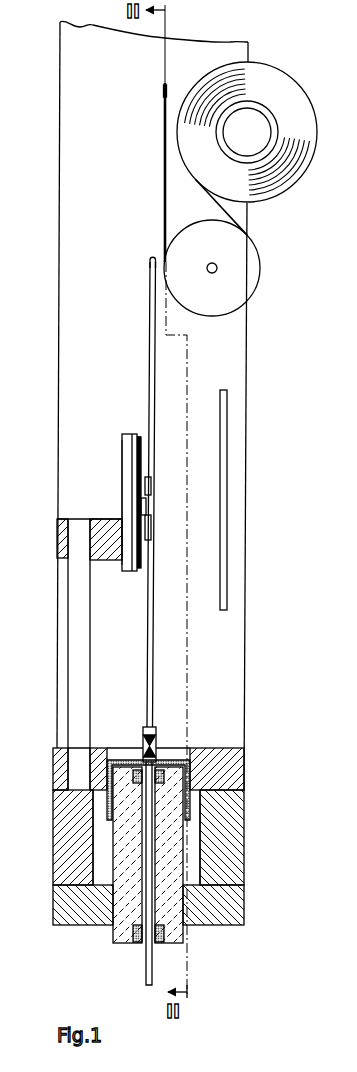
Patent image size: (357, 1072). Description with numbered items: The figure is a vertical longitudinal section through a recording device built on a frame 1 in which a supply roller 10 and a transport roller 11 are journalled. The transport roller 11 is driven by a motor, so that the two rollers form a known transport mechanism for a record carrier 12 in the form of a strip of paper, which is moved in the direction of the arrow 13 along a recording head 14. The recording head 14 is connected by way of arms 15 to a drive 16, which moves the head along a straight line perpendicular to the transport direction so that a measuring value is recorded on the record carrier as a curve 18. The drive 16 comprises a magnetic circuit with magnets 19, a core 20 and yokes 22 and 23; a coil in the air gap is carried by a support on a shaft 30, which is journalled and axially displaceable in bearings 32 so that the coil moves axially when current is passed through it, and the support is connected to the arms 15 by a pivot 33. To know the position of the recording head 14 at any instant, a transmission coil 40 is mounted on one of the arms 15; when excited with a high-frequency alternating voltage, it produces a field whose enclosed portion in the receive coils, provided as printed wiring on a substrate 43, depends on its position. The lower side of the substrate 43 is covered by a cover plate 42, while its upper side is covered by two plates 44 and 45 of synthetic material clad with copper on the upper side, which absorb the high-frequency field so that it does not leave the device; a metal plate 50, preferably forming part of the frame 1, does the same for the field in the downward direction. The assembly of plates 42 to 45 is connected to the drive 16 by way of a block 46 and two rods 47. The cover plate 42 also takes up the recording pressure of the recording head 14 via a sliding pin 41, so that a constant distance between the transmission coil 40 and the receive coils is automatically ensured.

The frame 1 is at (74, 76).
The supply roller 10 is at (278, 84).
The transport roller 11 is at (250, 281).
The record carrier 12 is at (163, 150).
The arrow 13 is at (164, 92).
The recording head 14 is at (161, 262).
The arms 15 is at (154, 357).
The drive 16 is at (54, 820).
The curve 18 is at (62, 863).
The magnets 19 is at (232, 848).
The core 20 is at (115, 927).
The yoke 22 is at (237, 778).
The yoke 23 is at (232, 908).
The shaft 30 is at (145, 975).
The bearings 32 is at (158, 775).
The pivot 33 is at (142, 738).
The transmission coil 40 is at (150, 483).
The sliding pin 41 is at (146, 508).
The cover plate 42 is at (140, 438).
The substrate 43 is at (138, 437).
The plate 44 is at (132, 466).
The plate 45 is at (126, 488).
The block 46 is at (60, 524).
The rods 47 is at (78, 622).
The metal plate 50 is at (226, 415).